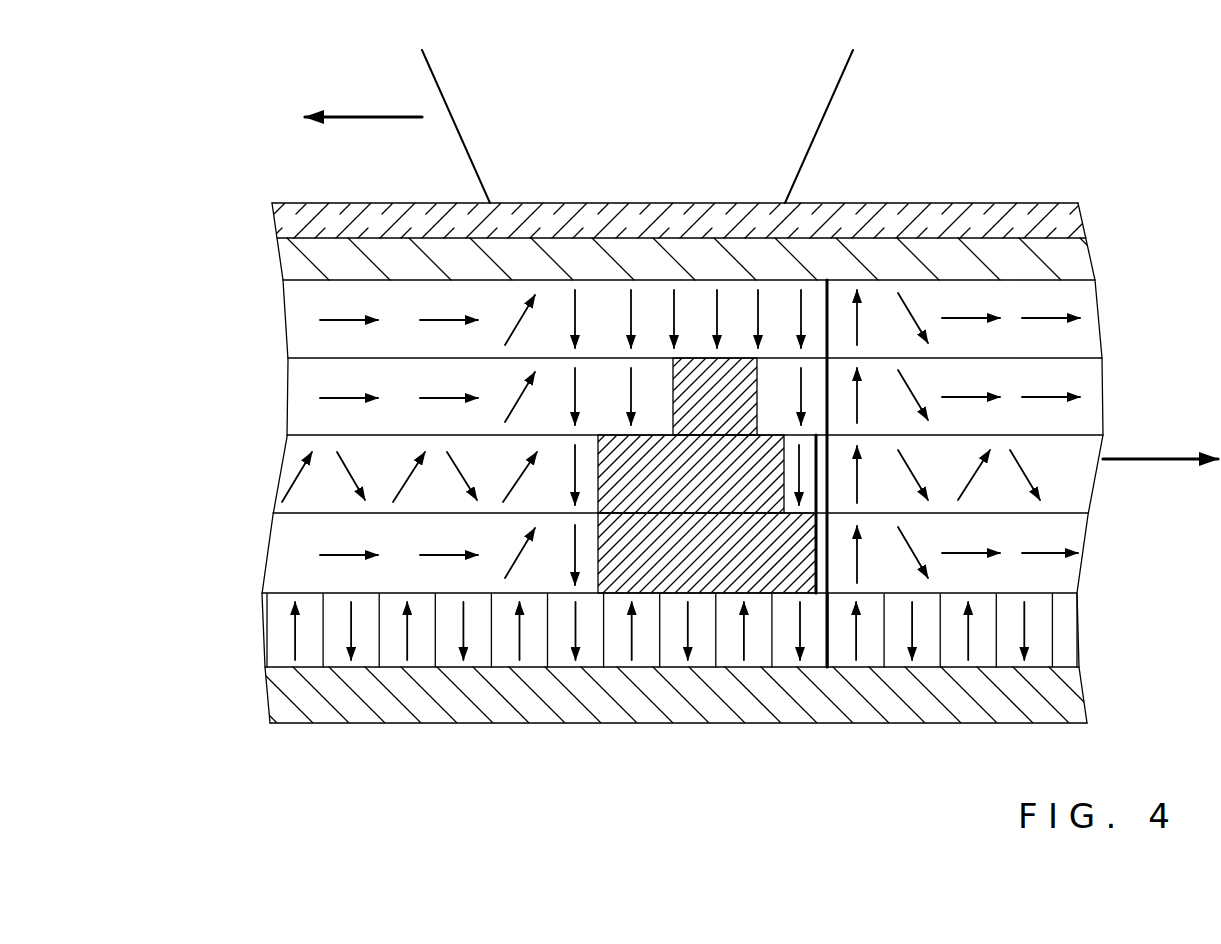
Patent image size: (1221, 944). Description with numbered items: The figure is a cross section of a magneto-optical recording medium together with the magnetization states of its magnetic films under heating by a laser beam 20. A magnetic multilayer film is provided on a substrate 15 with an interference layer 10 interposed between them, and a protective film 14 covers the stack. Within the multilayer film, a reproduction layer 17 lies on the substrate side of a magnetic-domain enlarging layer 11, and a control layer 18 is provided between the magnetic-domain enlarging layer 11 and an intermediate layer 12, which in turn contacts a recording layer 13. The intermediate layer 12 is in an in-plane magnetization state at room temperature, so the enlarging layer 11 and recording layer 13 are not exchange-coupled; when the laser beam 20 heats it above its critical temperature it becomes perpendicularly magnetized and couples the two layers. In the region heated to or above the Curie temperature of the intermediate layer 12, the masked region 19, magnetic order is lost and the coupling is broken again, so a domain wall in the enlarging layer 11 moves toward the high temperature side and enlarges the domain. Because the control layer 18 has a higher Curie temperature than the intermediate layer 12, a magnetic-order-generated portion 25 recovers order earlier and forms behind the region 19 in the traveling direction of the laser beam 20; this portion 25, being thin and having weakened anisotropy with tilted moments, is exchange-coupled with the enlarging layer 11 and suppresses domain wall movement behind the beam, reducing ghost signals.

The substrate 15 is at (287, 222).
The interference layer 10 is at (293, 262).
The reproduction layer 17 is at (293, 330).
The magnetic-domain enlarging layer 11 is at (293, 405).
The control layer 18 is at (293, 472).
The intermediate layer 12 is at (282, 555).
The recording layer 13 is at (275, 637).
The protective film 14 is at (285, 707).
The masked region 19 is at (678, 592).
The magnetic-order-generated portion 25 is at (785, 502).
The laser beam 20 is at (803, 103).